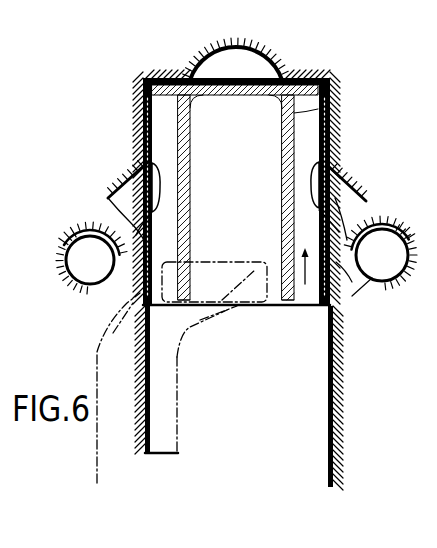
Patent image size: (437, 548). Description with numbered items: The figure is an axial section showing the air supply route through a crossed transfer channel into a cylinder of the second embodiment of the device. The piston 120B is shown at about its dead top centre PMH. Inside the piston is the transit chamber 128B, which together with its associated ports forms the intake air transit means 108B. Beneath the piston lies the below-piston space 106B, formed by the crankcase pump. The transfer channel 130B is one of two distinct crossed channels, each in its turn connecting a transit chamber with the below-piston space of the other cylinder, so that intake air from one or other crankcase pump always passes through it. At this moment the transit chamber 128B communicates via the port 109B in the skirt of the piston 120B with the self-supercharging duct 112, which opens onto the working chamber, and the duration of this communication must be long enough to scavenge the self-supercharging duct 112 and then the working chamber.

The dead top centre PMH is at (138, 85).
The piston 120B is at (337, 104).
The port 109B is at (134, 162).
The self-supercharging duct 112 is at (133, 197).
The transit chamber 128B is at (343, 287).
The intake air transit means 108B is at (302, 294).
The transfer channel 130B is at (97, 345).
The below-piston space 106B is at (261, 438).